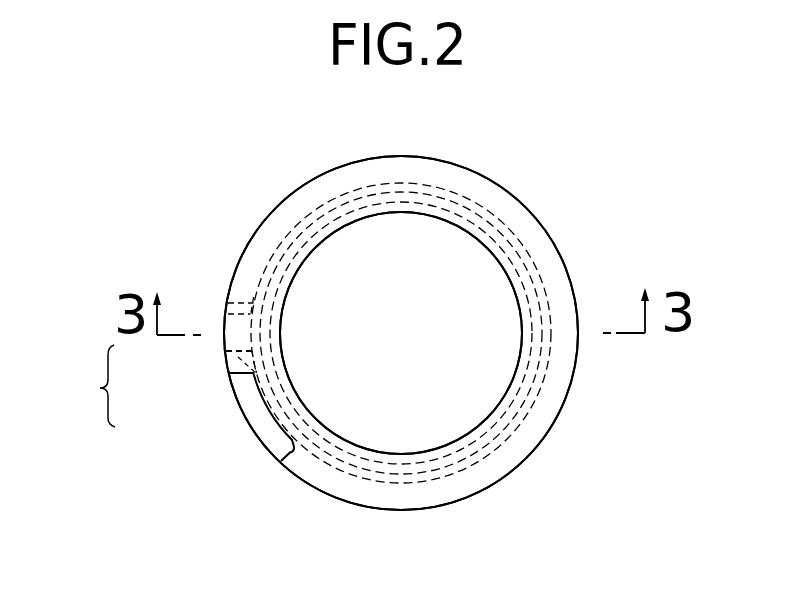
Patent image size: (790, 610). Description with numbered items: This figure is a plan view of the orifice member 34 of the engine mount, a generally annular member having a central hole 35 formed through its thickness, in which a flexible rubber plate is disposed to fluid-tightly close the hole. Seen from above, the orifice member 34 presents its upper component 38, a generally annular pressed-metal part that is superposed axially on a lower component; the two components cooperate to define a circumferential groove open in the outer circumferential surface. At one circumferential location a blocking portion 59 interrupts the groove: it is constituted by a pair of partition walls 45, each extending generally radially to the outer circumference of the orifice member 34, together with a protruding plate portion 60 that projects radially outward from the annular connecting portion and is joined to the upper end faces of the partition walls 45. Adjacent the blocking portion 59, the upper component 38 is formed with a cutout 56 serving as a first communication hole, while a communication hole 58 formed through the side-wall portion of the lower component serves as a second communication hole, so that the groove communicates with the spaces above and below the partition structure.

The orifice member 34 is at (540, 181).
The central hole 35 is at (483, 243).
The upper component 38 is at (538, 432).
The partition wall 45 is at (238, 310).
The cutout 56 is at (279, 458).
The communication hole 58 is at (288, 224).
The blocking portion 59 is at (157, 386).
The protruding plate portion 60 is at (212, 359).